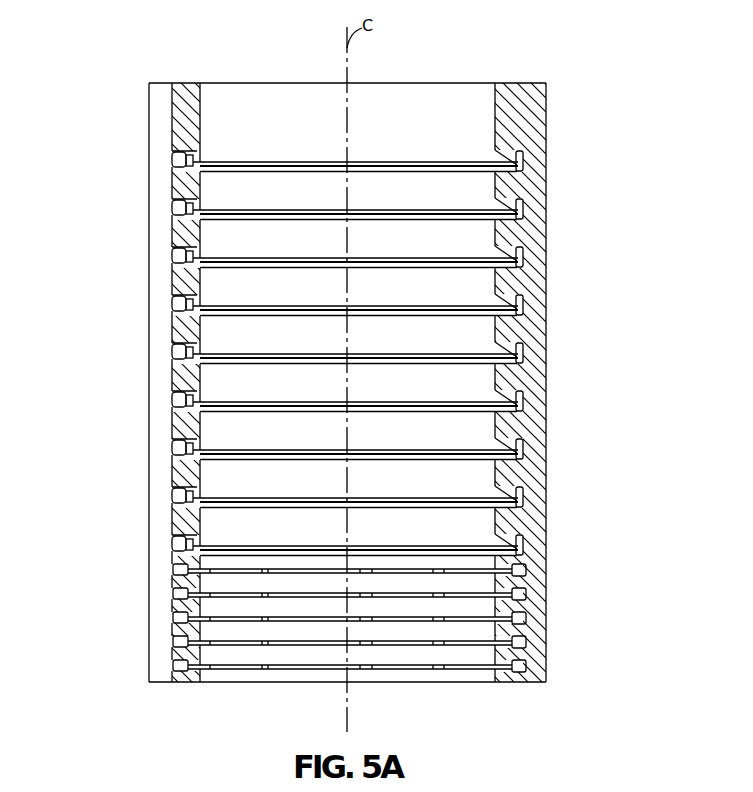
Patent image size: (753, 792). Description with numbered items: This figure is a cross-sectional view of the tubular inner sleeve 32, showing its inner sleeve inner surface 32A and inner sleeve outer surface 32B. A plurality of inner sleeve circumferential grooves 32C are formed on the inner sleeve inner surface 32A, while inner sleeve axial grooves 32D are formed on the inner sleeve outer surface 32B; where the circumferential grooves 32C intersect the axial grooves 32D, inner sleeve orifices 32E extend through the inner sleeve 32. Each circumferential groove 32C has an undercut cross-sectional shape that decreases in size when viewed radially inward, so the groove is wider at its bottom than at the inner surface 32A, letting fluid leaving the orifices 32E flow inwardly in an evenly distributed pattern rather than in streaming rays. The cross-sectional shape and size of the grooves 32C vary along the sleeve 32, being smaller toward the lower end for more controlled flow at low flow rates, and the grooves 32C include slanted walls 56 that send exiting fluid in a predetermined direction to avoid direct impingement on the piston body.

The inner sleeve 32 is at (553, 50).
The inner sleeve inner surface 32A is at (495, 117).
The inner sleeve outer surface 32B is at (546, 115).
The inner sleeve circumferential grooves 32C is at (522, 248).
The inner sleeve axial grooves 32D is at (157, 302).
The inner sleeve orifices 32E is at (172, 206).
The slanted walls 56 is at (178, 450).